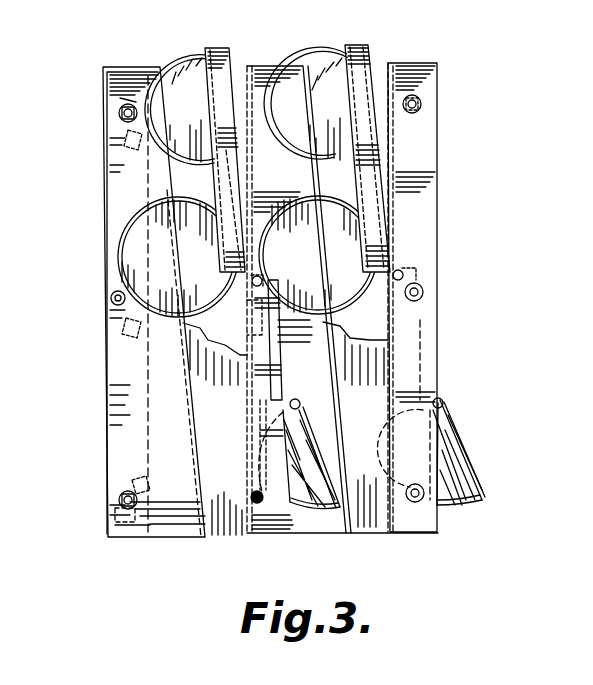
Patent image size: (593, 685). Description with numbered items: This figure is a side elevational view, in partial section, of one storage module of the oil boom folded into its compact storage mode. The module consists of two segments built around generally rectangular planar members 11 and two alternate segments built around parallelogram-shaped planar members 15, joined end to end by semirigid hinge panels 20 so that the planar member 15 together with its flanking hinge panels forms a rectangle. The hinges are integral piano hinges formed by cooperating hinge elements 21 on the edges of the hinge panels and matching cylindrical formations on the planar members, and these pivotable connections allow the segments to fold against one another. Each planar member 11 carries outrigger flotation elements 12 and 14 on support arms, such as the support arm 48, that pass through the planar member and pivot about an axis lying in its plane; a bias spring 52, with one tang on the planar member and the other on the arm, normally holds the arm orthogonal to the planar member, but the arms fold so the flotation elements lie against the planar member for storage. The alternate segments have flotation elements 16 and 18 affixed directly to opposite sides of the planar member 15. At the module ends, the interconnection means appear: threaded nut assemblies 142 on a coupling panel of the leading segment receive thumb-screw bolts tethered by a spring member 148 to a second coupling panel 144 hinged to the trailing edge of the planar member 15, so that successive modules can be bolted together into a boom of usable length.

The planar member 11 is at (254, 157).
The flotation element 12 is at (186, 60).
The flotation element 14 is at (331, 512).
The planar member 15 is at (172, 244).
The flotation element 16 is at (117, 228).
The flotation element 18 is at (190, 196).
The hinge panel 20 is at (276, 86).
The hinge elements 21 is at (227, 512).
The support arm 48 is at (221, 70).
The second bias spring 52 is at (206, 306).
The threaded nut assemblies 142 is at (423, 100).
The second coupling panel 144 is at (113, 388).
The spring member 148 is at (100, 141).